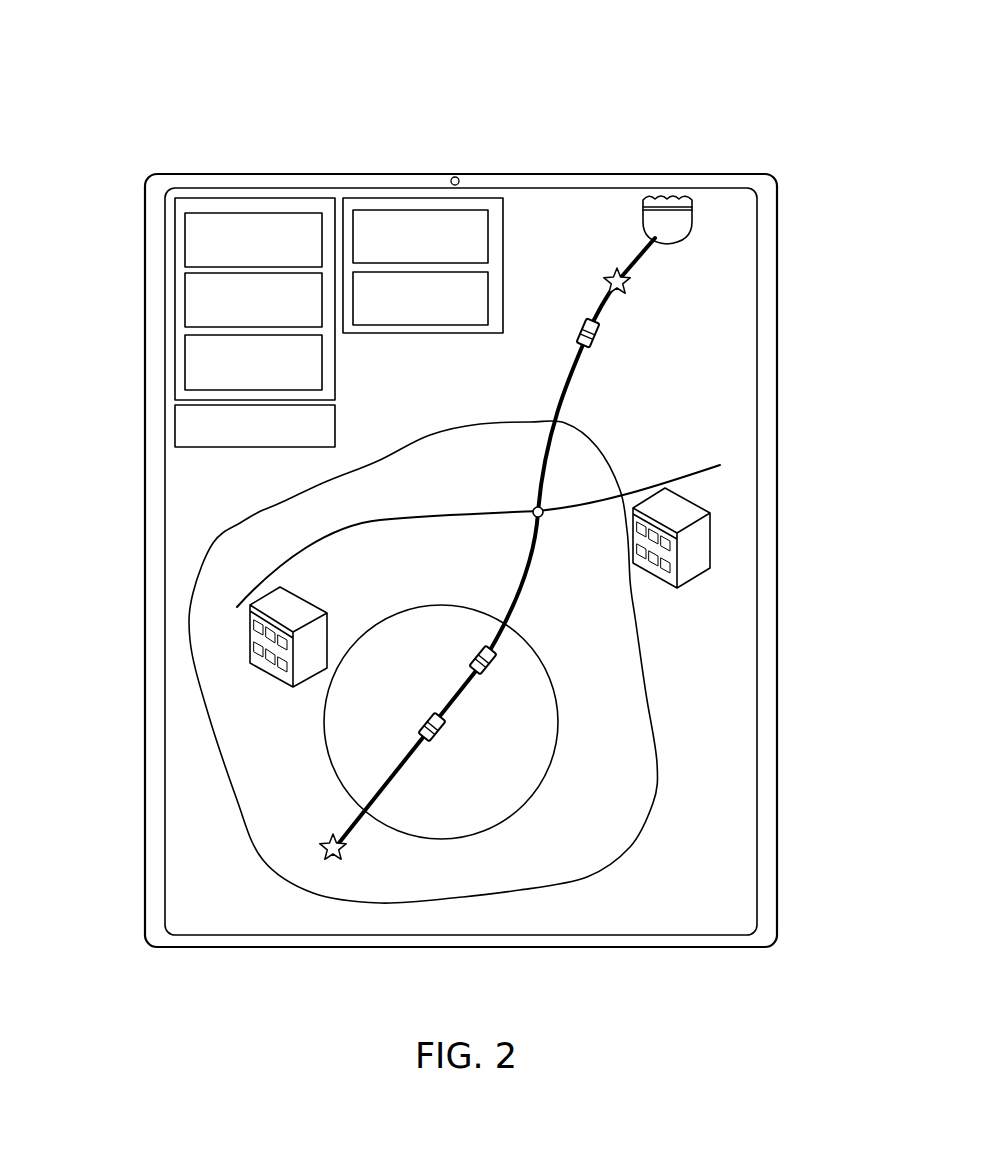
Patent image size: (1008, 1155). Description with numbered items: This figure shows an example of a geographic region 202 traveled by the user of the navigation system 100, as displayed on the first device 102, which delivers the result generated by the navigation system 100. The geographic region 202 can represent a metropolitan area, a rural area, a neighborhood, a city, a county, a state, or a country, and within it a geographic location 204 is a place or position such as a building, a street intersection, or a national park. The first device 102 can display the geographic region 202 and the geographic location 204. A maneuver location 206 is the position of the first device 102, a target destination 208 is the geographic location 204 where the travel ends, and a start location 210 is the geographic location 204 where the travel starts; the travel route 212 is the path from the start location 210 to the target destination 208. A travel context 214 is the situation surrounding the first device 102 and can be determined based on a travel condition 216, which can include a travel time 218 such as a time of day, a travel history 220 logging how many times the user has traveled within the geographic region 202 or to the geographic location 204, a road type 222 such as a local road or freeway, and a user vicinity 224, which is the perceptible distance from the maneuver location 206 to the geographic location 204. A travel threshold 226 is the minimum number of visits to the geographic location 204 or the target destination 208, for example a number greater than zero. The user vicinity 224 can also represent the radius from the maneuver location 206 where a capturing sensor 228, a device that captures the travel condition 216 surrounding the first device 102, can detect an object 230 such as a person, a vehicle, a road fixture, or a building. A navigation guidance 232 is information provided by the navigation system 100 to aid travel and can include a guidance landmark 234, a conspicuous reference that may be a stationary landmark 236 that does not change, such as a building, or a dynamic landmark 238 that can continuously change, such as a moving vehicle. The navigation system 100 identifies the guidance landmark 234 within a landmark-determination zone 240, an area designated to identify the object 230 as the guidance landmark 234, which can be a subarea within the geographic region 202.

The navigation system 100 is at (163, 55).
The first device 102 is at (183, 173).
The geographic region 202 is at (727, 288).
The geographic location 204 is at (545, 506).
The maneuver location 206 is at (410, 720).
The target destination 208 is at (607, 277).
The start location 210 is at (331, 838).
The travel route 212 is at (522, 597).
The travel context 214 is at (740, 178).
The travel condition 216 is at (297, 195).
The travel time 218 is at (203, 250).
The travel history 220 is at (203, 287).
The road type 222 is at (193, 362).
The user vicinity 224 is at (375, 625).
The travel threshold 226 is at (178, 428).
The capturing sensor 228 is at (455, 184).
The object 230 is at (600, 323).
The navigation guidance 232 is at (373, 195).
The guidance landmark 234 is at (700, 540).
The stationary landmark 236 is at (248, 637).
The dynamic landmark 238 is at (500, 648).
The landmark-determination zone 240 is at (657, 770).